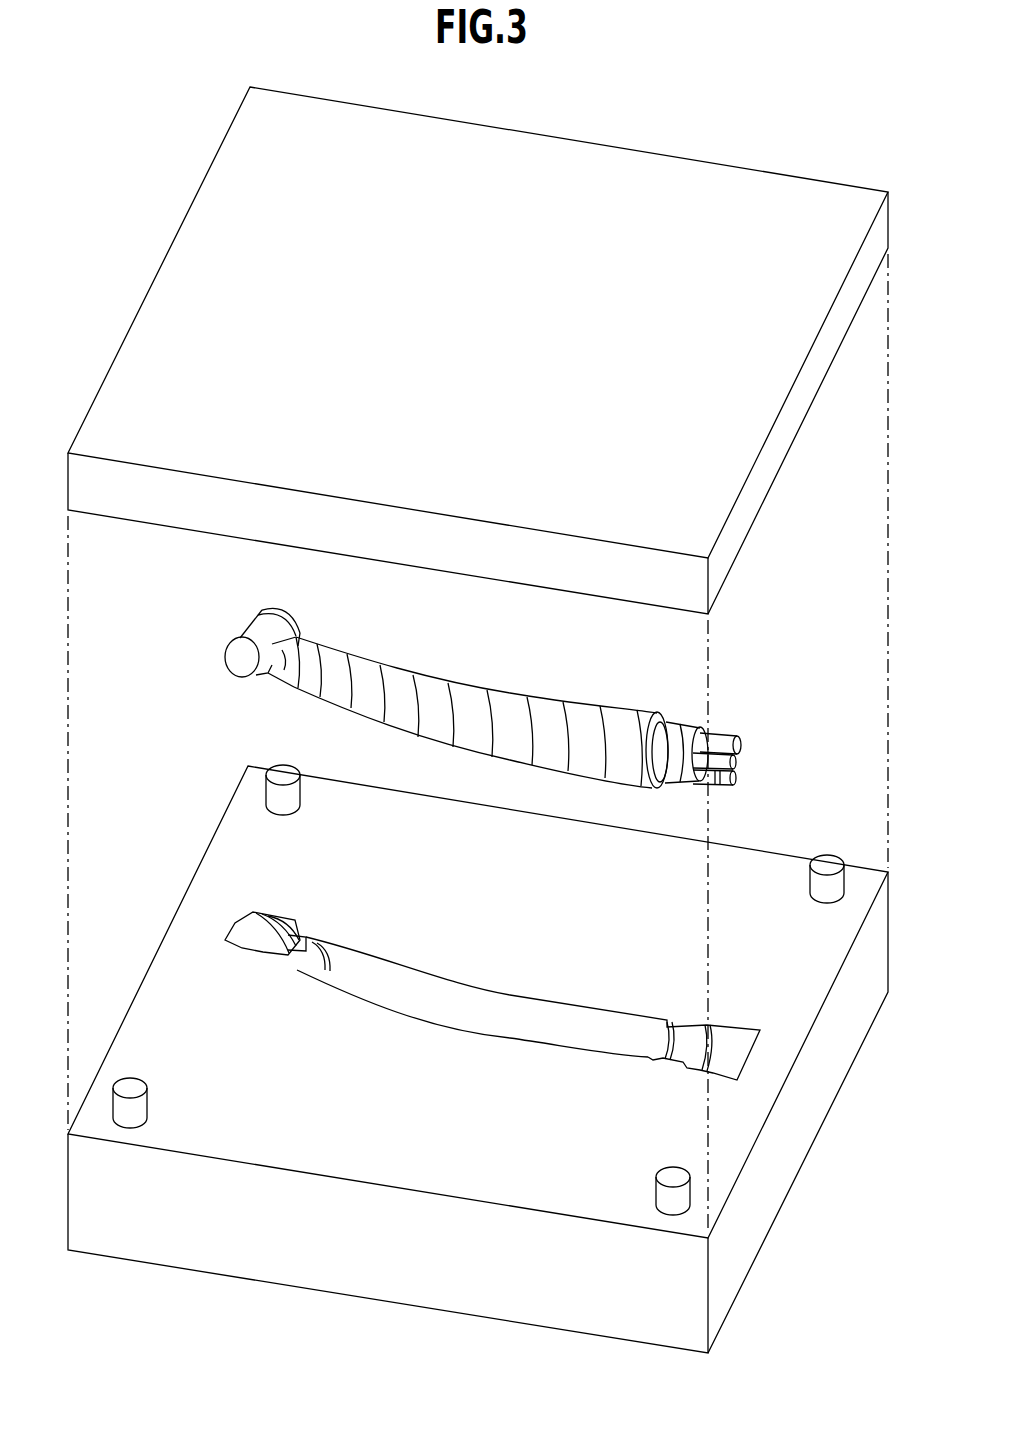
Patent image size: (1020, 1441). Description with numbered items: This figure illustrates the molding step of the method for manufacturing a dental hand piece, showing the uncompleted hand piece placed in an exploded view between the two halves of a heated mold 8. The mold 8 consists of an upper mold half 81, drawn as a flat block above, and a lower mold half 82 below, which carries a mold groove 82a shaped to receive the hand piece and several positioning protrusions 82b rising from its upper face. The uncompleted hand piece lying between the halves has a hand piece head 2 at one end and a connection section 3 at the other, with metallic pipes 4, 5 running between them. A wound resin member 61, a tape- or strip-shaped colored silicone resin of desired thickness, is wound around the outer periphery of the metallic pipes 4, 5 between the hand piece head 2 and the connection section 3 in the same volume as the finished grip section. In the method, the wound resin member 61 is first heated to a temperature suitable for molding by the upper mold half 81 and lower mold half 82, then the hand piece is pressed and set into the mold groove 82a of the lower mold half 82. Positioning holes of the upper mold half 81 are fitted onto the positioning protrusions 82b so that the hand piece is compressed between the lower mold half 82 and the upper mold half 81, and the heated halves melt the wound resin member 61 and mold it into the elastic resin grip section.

The hand piece head 2 is at (244, 657).
The connection section 3 is at (686, 722).
The metallic pipe 4 is at (735, 752).
The metallic pipe 5 is at (712, 786).
The wound resin member 61 is at (588, 712).
The mold 8 is at (105, 342).
The upper mold half 81 is at (180, 228).
The lower mold half 82 is at (167, 1243).
The mold groove 82a is at (497, 1034).
The positioning protrusions 82b is at (827, 866).